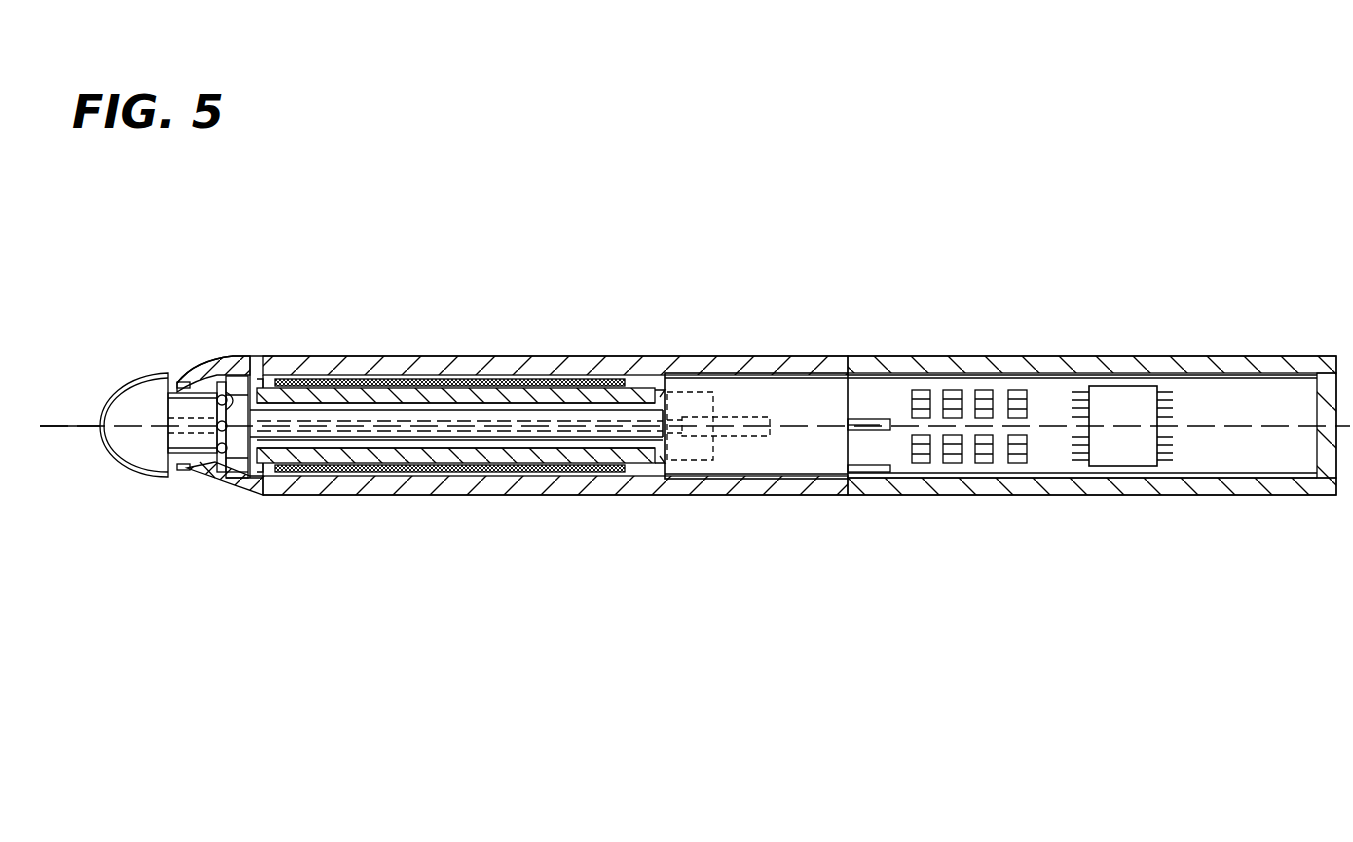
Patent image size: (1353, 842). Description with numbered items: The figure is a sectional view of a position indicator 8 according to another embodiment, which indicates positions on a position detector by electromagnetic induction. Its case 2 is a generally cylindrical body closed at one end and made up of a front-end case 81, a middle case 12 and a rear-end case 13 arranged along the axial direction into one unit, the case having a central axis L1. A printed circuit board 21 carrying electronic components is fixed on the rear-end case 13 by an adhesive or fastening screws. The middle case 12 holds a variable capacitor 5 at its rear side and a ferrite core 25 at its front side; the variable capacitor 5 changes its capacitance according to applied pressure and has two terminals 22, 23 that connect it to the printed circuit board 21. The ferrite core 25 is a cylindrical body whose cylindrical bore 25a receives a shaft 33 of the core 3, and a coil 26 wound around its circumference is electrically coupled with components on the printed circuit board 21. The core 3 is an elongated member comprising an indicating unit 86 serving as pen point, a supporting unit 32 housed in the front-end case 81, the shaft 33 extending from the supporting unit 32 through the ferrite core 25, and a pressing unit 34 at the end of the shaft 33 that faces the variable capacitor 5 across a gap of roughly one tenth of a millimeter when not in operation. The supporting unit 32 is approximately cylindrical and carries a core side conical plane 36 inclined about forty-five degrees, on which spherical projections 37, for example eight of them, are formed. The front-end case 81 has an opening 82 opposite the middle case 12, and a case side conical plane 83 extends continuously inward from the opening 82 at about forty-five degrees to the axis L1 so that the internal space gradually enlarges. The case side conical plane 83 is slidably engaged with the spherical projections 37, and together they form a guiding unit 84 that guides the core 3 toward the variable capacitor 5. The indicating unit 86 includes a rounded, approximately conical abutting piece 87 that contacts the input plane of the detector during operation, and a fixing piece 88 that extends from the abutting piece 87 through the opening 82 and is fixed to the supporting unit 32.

The case 2 is at (1007, 354).
The core 3 is at (97, 462).
The variable capacitor 5 is at (775, 385).
The position indicator 8 is at (1267, 310).
The middle case 12 is at (620, 360).
The rear-end case 13 is at (896, 362).
The printed circuit board 21 is at (1207, 387).
The terminal 22 is at (886, 470).
The terminal 23 is at (856, 418).
The ferrite core 25 is at (492, 395).
The cylindrical bore 25a is at (425, 400).
The coil 26 is at (342, 366).
The supporting unit 32 is at (222, 493).
The shaft 33 is at (470, 437).
The pressing unit 34 is at (726, 417).
The core side conical plane 36 is at (245, 500).
The spherical projections 37 is at (240, 398).
The front-end case 81 is at (240, 490).
The opening 82 is at (178, 378).
The case side conical plane 83 is at (226, 392).
The guiding unit 84 is at (213, 478).
The indicating unit 86 is at (124, 381).
The abutting piece 87 is at (132, 462).
The fixing piece 88 is at (182, 470).
The central axis of the case L1 is at (50, 418).